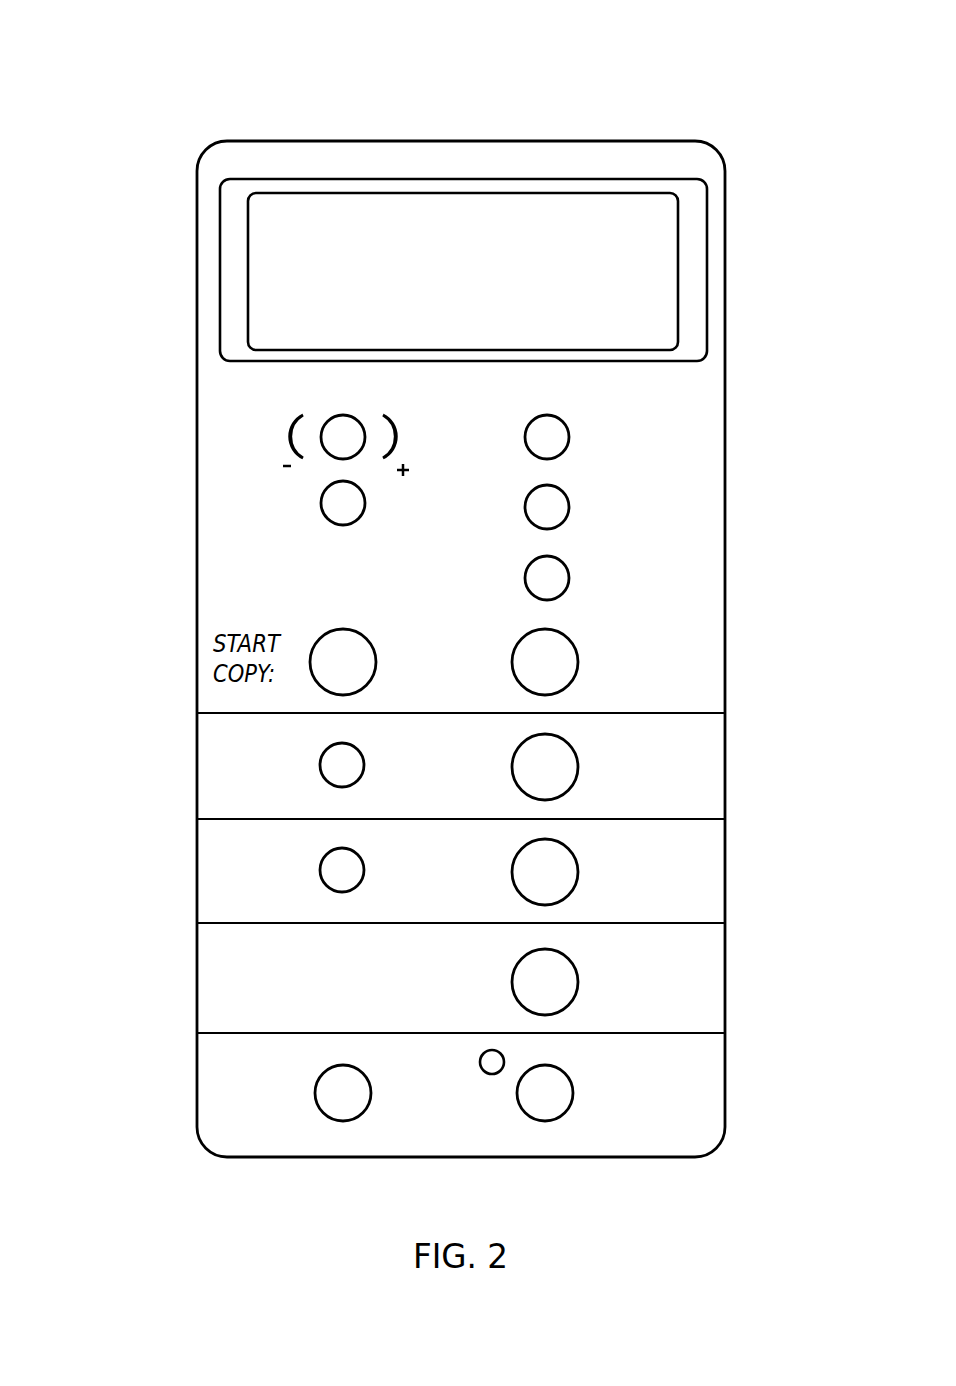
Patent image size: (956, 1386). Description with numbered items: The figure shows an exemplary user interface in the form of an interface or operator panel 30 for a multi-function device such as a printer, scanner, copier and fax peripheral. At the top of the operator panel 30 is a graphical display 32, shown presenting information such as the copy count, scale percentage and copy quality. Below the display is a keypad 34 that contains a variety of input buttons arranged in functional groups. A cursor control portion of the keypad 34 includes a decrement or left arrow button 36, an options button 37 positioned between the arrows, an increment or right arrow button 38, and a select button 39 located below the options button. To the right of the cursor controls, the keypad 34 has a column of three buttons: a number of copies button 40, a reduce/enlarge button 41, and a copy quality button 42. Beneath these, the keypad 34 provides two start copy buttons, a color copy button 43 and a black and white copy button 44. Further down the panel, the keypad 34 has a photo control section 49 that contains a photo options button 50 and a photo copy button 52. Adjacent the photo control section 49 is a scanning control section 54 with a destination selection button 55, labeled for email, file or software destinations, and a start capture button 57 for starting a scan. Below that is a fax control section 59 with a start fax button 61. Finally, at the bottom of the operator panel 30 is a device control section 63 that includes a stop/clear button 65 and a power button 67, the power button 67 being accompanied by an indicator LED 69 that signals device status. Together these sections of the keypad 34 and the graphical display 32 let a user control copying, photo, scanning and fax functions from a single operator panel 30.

The operator panel 30 is at (387, 88).
The graphical display 32 is at (612, 193).
The keypad 34 is at (130, 488).
The decrement or left arrow button 36 is at (278, 417).
The options button 37 is at (353, 458).
The increment or right arrow button 38 is at (408, 418).
The select button 39 is at (322, 518).
The number of copies button 40 is at (553, 420).
The reduce/enlarge button 41 is at (553, 492).
The copy quality button 42 is at (553, 562).
The color copy button 43 is at (343, 628).
The black and white copy button 44 is at (560, 643).
The photo control section 49 is at (130, 784).
The photo options button 50 is at (332, 747).
The photo copy button 52 is at (560, 747).
The scanning control section 54 is at (130, 884).
The destination selection button 55 is at (328, 892).
The start capture button 57 is at (560, 855).
The fax control section 59 is at (130, 985).
The start fax button 61 is at (560, 960).
The device control section 63 is at (141, 1115).
The stop/clear button 65 is at (343, 1065).
The power button 67 is at (565, 1083).
The indicator LED 69 is at (492, 1074).